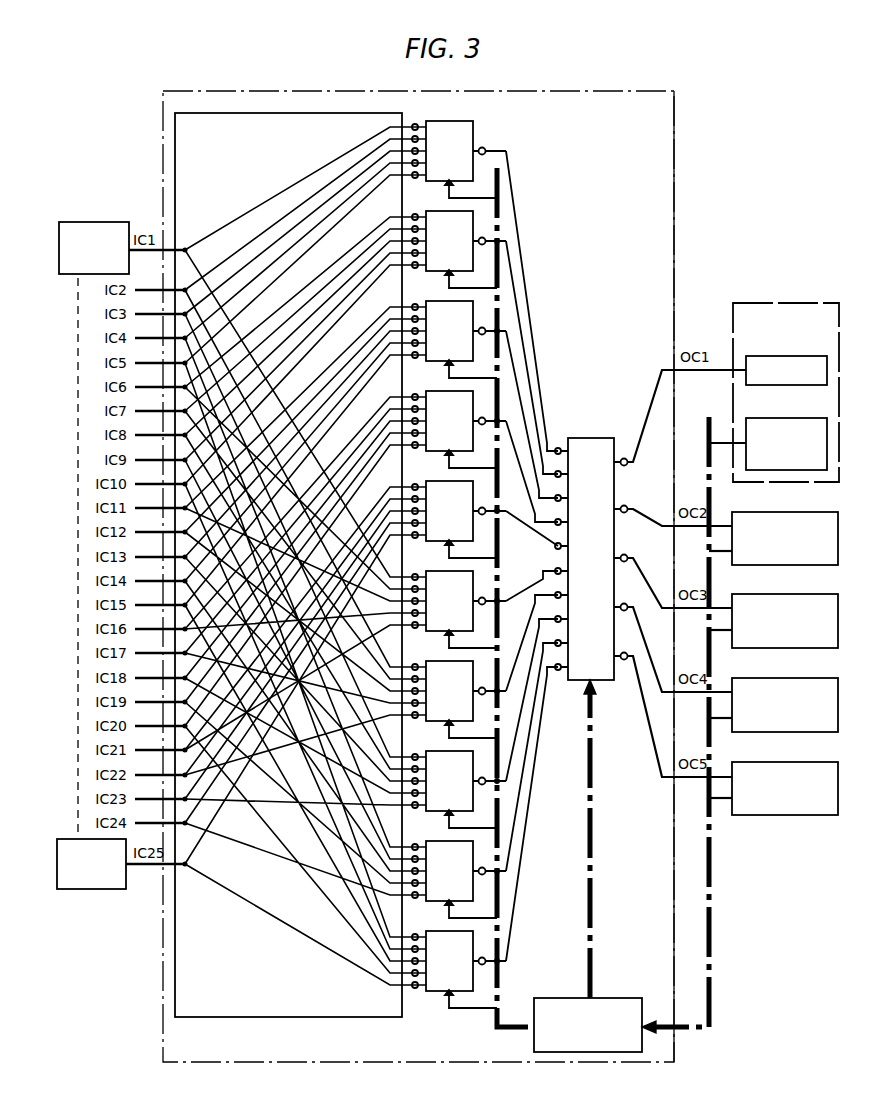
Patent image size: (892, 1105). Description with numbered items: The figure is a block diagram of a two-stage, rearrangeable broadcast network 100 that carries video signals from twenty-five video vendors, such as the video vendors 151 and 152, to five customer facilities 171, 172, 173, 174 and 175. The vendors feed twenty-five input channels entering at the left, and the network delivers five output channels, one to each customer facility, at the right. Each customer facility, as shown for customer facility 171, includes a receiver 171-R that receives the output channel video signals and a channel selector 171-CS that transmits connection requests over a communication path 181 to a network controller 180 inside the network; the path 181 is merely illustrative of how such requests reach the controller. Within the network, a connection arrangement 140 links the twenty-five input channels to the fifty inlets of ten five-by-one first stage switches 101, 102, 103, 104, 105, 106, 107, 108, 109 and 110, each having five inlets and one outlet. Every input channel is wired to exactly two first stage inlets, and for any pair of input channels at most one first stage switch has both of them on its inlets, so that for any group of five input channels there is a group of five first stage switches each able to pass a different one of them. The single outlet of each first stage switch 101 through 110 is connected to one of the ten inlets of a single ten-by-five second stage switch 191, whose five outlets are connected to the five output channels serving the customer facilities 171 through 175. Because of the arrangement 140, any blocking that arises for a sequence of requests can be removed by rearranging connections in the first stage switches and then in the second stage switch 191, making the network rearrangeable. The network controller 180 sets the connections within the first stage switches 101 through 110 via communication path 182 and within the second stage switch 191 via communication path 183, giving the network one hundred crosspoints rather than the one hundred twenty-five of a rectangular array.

The two-stage rearrangeable broadcast network 100 is at (622, 91).
The first stage switch 101 is at (426, 121).
The first stage switch 102 is at (447, 211).
The first stage switch 103 is at (447, 301).
The first stage switch 104 is at (447, 391).
The first stage switch 105 is at (447, 481).
The first stage switch 106 is at (447, 571).
The first stage switch 107 is at (447, 661).
The first stage switch 108 is at (447, 751).
The first stage switch 109 is at (447, 841).
The first stage switch 110 is at (447, 931).
The connection arrangement 140 is at (222, 1017).
The video vendor 151 is at (93, 222).
The video vendor 152 is at (93, 889).
The customer facility 171 is at (787, 303).
The receiver 171-R is at (787, 385).
The channel selector 171-CS is at (788, 418).
The customer facility 172 is at (796, 512).
The customer facility 173 is at (796, 594).
The customer facility 174 is at (796, 678).
The customer facility 175 is at (796, 762).
The network controller 180 is at (600, 998).
The communication path 181 is at (712, 918).
The communication path 182 is at (500, 1000).
The communication path 183 is at (592, 844).
The second stage switch 191 is at (578, 438).